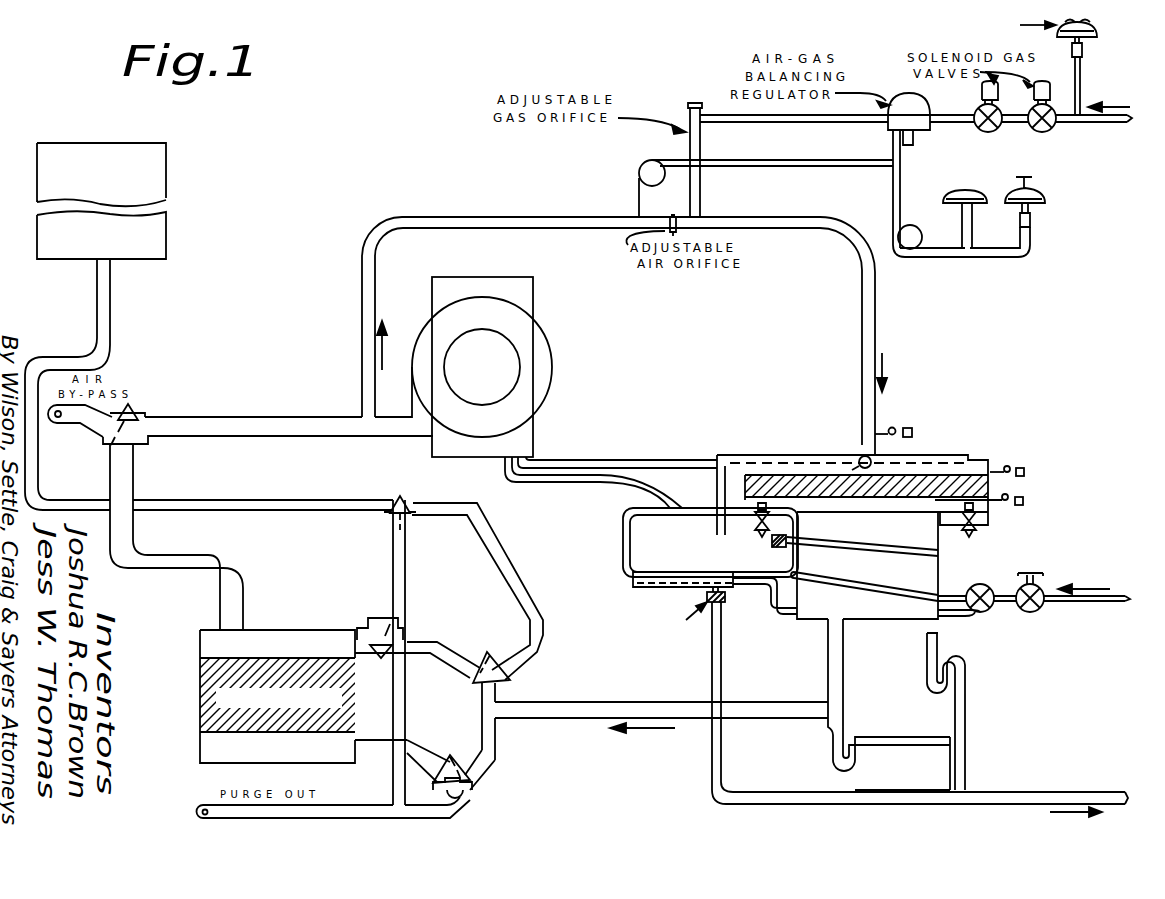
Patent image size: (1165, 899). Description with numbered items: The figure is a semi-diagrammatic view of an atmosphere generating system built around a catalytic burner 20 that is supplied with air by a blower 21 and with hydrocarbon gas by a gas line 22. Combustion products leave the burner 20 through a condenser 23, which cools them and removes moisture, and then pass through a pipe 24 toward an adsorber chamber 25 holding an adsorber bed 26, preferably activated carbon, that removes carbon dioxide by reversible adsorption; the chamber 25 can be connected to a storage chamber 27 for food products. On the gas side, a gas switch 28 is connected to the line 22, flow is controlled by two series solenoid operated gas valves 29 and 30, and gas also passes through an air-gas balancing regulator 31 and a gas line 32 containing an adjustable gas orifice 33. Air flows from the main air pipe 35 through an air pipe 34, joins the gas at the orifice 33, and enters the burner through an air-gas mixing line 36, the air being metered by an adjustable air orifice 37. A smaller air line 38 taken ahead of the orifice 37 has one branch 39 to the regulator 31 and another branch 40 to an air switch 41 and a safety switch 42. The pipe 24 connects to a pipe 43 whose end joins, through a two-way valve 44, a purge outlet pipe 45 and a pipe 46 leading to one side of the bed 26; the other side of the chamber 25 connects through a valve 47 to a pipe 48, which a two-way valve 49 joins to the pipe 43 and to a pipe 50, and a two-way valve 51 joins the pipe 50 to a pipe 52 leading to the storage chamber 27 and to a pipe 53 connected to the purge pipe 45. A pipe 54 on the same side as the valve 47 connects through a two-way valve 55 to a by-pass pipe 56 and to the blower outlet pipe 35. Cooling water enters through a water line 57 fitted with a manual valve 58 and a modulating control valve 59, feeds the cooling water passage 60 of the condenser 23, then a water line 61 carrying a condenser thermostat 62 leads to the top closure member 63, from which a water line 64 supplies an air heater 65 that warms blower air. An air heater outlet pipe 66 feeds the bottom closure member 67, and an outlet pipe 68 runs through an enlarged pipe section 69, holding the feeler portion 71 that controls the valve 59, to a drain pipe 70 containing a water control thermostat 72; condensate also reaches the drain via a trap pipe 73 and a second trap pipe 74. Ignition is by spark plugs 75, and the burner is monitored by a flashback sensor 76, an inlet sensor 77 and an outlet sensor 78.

The catalytic burner 20 is at (809, 453).
The blower 21 is at (552, 358).
The gas line 22 is at (1088, 124).
The condenser 23 is at (867, 565).
The pipe 24 is at (741, 701).
The adsorber chamber 25 is at (297, 629).
The adsorber bed 26 is at (230, 658).
The storage chamber 27 is at (168, 182).
The gas switch 28 is at (1092, 34).
The solenoid operated gas valve 29 is at (1032, 133).
The solenoid operated gas valve 30 is at (985, 133).
The air-gas balancing regulator 31 is at (926, 128).
The gas line 32 is at (700, 197).
The adjustable gas orifice 33 is at (703, 220).
The air pipe 34 is at (474, 216).
The main air pipe 35 is at (304, 416).
The air-gas mixing line 36 is at (876, 337).
The adjustable air orifice 37 is at (745, 232).
The air line 38 is at (745, 158).
The branch 39 is at (893, 146).
The branch 40 is at (926, 258).
The air switch 41 is at (950, 202).
The safety switch 42 is at (1035, 208).
The pipe 43 is at (481, 718).
The two-way valve 44 is at (468, 796).
The purge outlet pipe 45 is at (372, 803).
The pipe 46 is at (410, 745).
The valve 47 is at (368, 620).
The pipe 48 is at (427, 638).
The two-way valve 49 is at (508, 673).
The pipe 50 is at (518, 578).
The two-way valve 51 is at (399, 497).
The pipe 52 is at (285, 500).
The pipe 53 is at (410, 610).
The pipe 54 is at (134, 546).
The two-way valve 55 is at (135, 459).
The by-pass pipe 56 is at (68, 428).
The water line 57 is at (1105, 604).
The manual valve 58 is at (1043, 606).
The modulating control valve 59 is at (1040, 575).
The cooling water passage 60 is at (824, 584).
The water line 61 is at (700, 527).
The condenser thermostat 62 is at (782, 529).
The top closure member 63 is at (764, 452).
The water line 64 is at (666, 458).
The air heater 65 is at (527, 306).
The air heater outlet pipe 66 is at (553, 481).
The bottom closure member 67 is at (987, 516).
The outlet pipe 68 is at (622, 541).
The enlarged pipe section 69 is at (636, 590).
The drain pipe 70 is at (770, 790).
The feeler portion 71 is at (732, 568).
The water control thermostat 72 is at (726, 600).
The trap pipe 73 is at (926, 680).
The second trap pipe 74 is at (868, 740).
The spark plugs 75 is at (756, 527).
The flashback sensor 76 is at (883, 430).
The inlet sensor 77 is at (995, 470).
The outlet sensor 78 is at (997, 500).